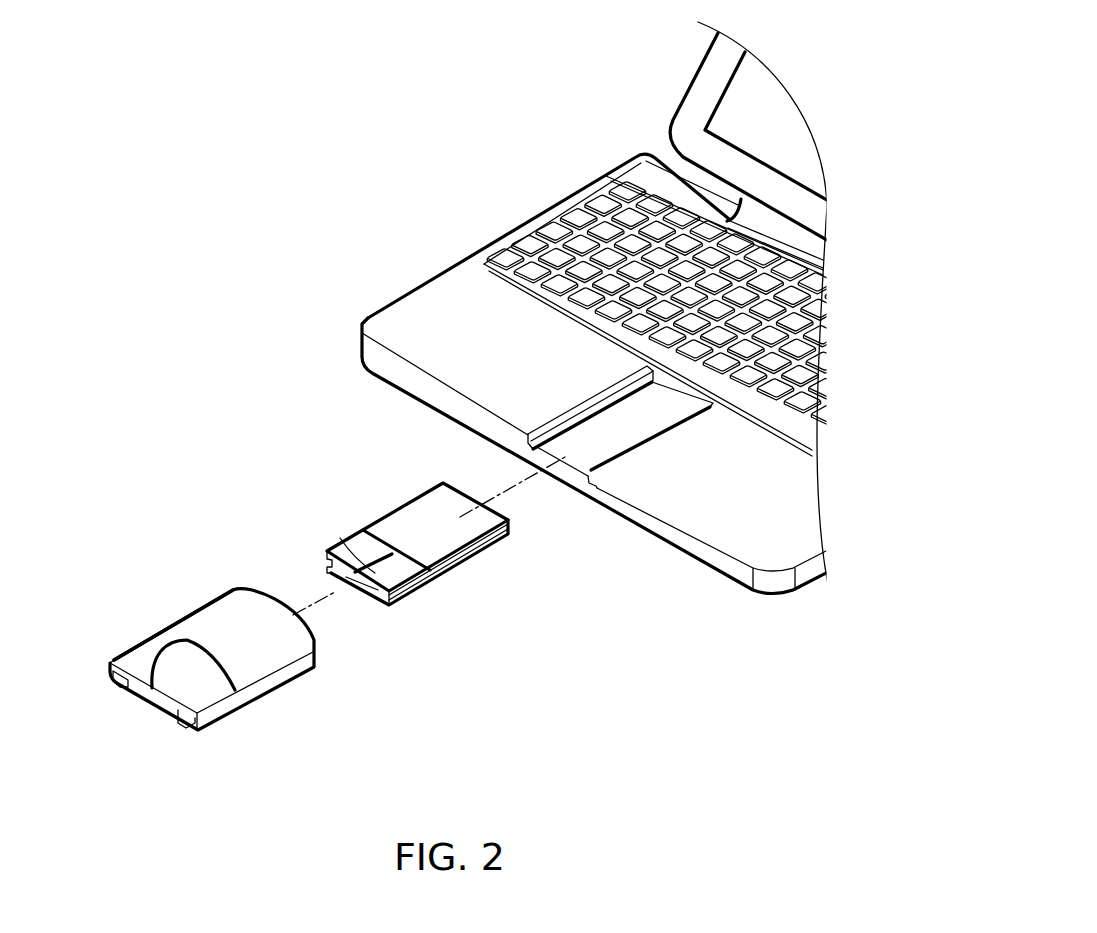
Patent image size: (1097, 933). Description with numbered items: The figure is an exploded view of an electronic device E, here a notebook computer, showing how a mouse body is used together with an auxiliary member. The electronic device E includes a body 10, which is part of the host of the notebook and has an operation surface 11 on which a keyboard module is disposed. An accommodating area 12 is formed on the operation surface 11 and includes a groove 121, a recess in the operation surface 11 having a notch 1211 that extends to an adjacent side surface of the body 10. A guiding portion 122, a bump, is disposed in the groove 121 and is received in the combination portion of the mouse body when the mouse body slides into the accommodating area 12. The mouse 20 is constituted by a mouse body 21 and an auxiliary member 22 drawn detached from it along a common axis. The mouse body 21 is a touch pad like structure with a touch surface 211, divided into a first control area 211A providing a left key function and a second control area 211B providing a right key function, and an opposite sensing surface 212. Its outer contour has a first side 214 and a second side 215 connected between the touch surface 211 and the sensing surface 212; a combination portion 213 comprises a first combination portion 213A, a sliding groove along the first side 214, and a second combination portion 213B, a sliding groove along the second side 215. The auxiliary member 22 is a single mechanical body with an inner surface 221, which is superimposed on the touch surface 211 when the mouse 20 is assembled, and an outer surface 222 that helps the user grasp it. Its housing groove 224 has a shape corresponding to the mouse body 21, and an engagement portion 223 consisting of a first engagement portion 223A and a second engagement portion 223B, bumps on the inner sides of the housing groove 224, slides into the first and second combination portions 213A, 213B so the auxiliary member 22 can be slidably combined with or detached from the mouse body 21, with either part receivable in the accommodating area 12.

The electronic device E is at (598, 102).
The body 10 is at (660, 308).
The operation surface 11 is at (420, 352).
The accommodating area 12 is at (560, 453).
The groove 121 is at (628, 446).
The guiding portion 122 is at (524, 444).
The notch 1211 is at (581, 508).
The mouse 20 is at (298, 615).
The mouse body 21 is at (358, 559).
The touch surface 211 is at (363, 507).
The first control area 211A is at (343, 550).
The second control area 211B is at (366, 540).
The sensing surface 212 is at (492, 552).
The combination portion 213 is at (289, 545).
The first combination portion 213A is at (328, 573).
The second combination portion 213B is at (327, 558).
The first side 214 is at (445, 573).
The second side 215 is at (325, 553).
The auxiliary member 22 is at (209, 682).
The inner surface 221 is at (163, 703).
The outer surface 222 is at (200, 640).
The engagement portion 223 is at (144, 729).
The first engagement portion 223A is at (180, 740).
The second engagement portion 223B is at (113, 685).
The housing groove 224 is at (125, 667).